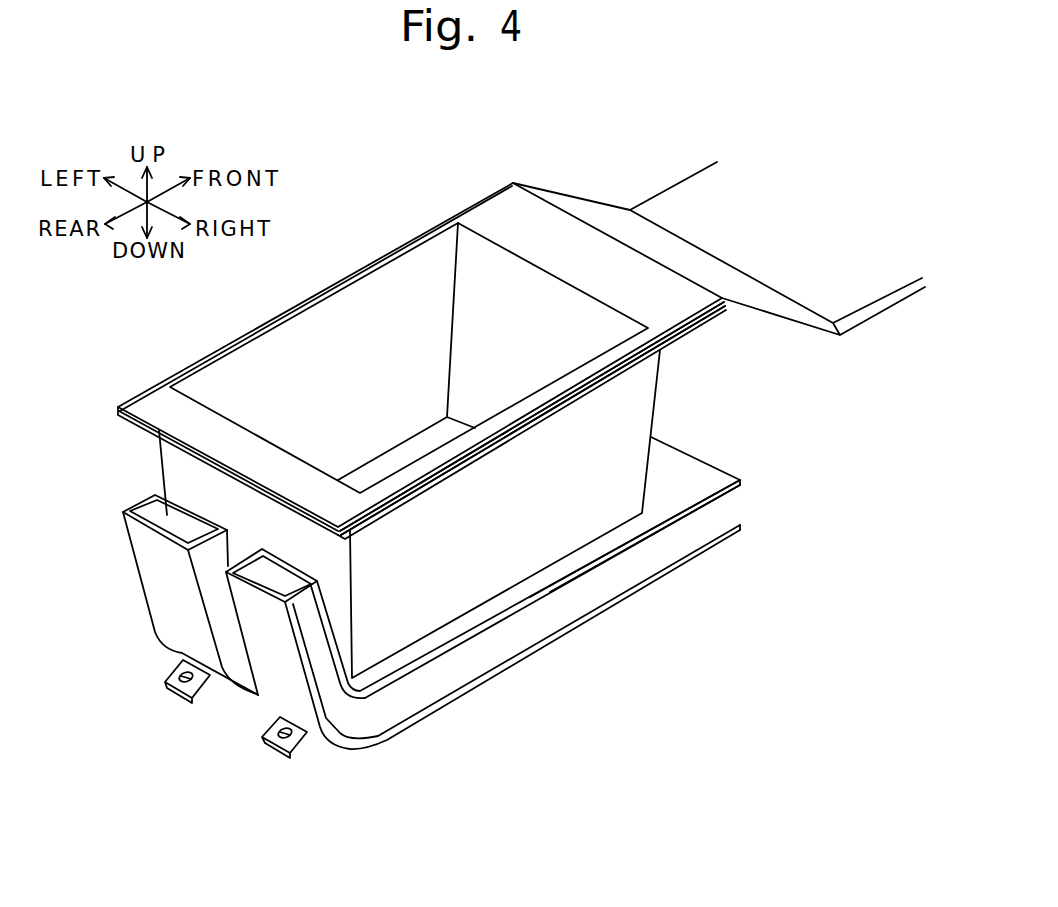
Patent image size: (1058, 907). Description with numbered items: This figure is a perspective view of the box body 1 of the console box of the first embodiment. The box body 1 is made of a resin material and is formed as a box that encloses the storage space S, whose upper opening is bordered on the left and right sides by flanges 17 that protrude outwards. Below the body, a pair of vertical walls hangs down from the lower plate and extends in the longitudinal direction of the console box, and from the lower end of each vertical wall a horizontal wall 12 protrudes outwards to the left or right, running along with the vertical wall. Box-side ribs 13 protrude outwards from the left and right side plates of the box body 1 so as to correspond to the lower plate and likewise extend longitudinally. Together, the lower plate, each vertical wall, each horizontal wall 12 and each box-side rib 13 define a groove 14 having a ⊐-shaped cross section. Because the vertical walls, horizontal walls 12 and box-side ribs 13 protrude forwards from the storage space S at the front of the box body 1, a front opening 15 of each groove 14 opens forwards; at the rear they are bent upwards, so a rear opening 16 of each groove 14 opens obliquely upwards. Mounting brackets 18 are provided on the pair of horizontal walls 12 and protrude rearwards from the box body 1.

The box body 1 is at (493, 207).
The storage space S is at (412, 420).
The horizontal wall 12 is at (635, 572).
The box-side rib 13 is at (530, 587).
The groove 14 is at (550, 603).
The front opening 15 is at (710, 513).
The rear opening 16 is at (155, 495).
The flange 17 is at (593, 385).
The mounting bracket 18 is at (173, 681).